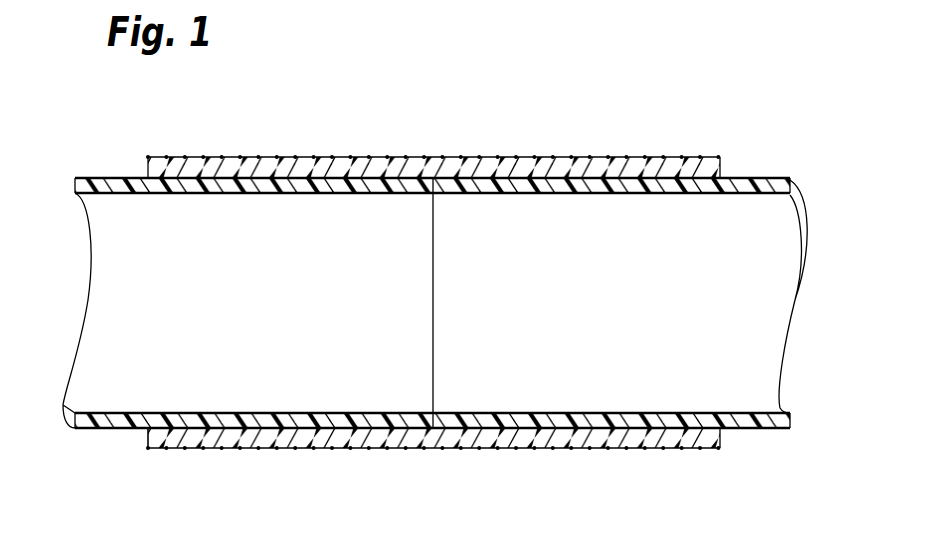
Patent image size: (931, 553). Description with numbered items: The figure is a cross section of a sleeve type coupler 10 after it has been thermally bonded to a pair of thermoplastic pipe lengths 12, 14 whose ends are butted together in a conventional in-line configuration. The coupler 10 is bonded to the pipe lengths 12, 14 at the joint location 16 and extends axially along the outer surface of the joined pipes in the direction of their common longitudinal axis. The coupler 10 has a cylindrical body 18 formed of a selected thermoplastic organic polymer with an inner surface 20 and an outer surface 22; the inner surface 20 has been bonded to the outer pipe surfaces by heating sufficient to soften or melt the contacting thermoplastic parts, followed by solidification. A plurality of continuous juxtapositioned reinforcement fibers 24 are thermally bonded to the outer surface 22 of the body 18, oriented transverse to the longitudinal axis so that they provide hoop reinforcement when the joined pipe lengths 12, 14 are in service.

The sleeve type coupler 10 is at (679, 110).
The thermoplastic pipe length 12 is at (80, 177).
The thermoplastic pipe length 14 is at (776, 180).
The joint location 16 is at (435, 217).
The cylindrical body 18 is at (148, 432).
The inner surface 20 is at (270, 414).
The outer surface 22 is at (265, 445).
The reinforcement fibers 24 is at (295, 157).